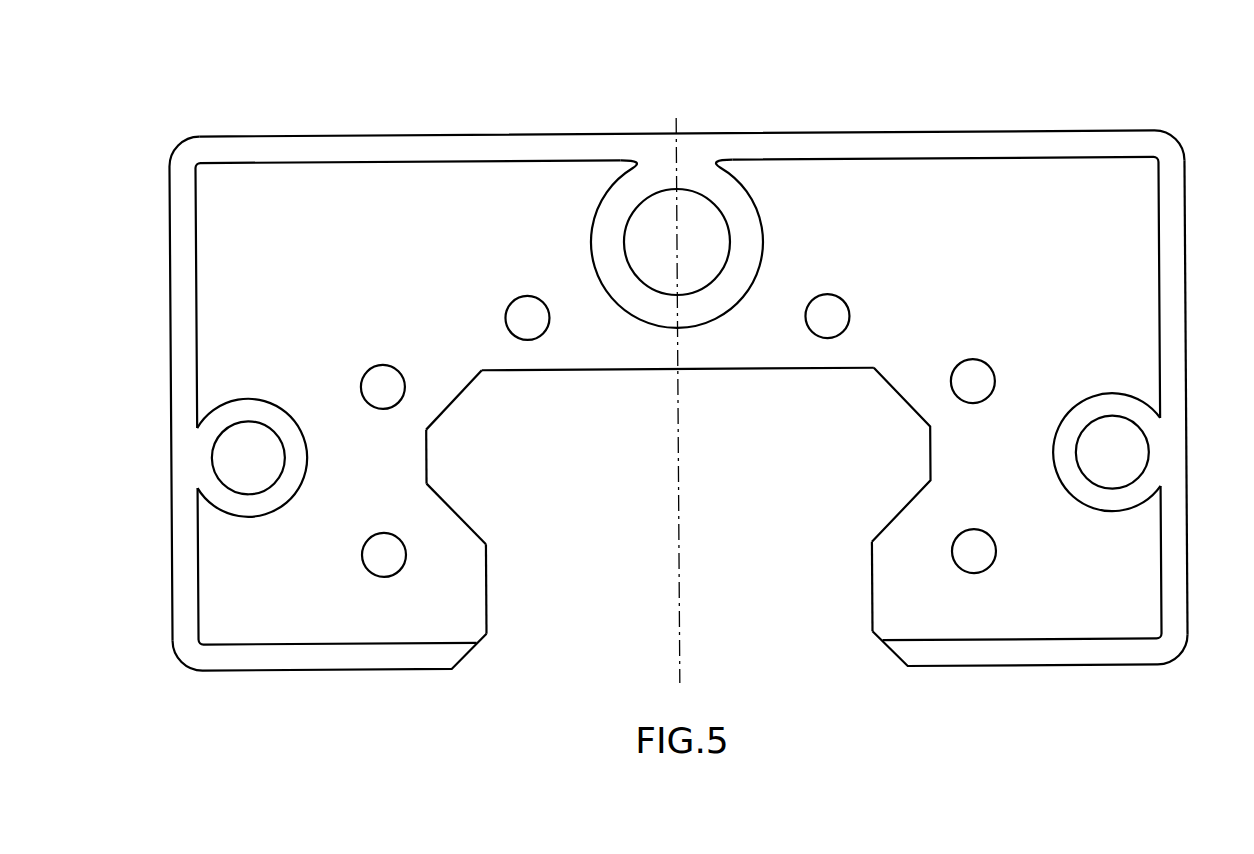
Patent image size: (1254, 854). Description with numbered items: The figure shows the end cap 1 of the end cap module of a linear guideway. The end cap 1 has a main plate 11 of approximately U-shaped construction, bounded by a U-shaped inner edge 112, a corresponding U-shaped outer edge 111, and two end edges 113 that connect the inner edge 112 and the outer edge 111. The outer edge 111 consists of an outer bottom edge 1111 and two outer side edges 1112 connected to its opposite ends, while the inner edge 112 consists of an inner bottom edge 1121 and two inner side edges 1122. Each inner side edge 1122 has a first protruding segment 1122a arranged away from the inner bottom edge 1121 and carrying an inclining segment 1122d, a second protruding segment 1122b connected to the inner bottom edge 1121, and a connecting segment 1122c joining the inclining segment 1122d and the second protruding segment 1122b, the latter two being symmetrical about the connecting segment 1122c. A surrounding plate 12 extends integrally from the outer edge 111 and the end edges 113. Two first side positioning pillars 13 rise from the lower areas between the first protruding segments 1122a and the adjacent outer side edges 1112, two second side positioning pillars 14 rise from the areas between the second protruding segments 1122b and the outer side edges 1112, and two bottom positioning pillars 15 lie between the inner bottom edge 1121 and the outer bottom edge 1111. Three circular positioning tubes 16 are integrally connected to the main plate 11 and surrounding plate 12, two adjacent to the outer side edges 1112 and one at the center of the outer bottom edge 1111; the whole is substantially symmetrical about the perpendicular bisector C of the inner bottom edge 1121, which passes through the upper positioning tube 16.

The end cap 1 is at (149, 80).
The main plate 11 is at (295, 185).
The surrounding plate 12 is at (178, 223).
The outer edge 111 is at (1058, 78).
The outer bottom edge 1111 is at (1081, 158).
The outer side edges 1112 is at (1163, 203).
The inner edge 112 is at (863, 253).
The inner bottom edge 1121 is at (840, 366).
The inner side edges 1122 is at (900, 393).
The first protruding segment 1122a is at (873, 555).
The second protruding segment 1122b is at (464, 393).
The connecting segment 1122c is at (428, 453).
The inclining segment 1122d is at (464, 516).
The end edges 113 is at (1036, 668).
The first side positioning pillars 13 is at (372, 548).
The second side positioning pillars 14 is at (378, 375).
The bottom positioning pillars 15 is at (522, 309).
The positioning tubes 16 is at (605, 218).
The perpendicular bisector C is at (678, 148).